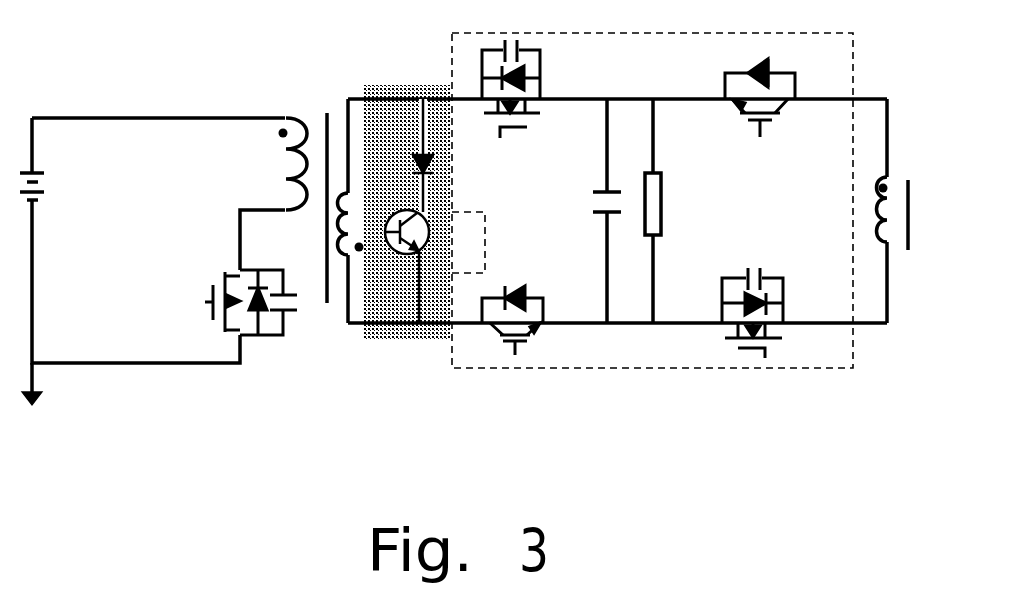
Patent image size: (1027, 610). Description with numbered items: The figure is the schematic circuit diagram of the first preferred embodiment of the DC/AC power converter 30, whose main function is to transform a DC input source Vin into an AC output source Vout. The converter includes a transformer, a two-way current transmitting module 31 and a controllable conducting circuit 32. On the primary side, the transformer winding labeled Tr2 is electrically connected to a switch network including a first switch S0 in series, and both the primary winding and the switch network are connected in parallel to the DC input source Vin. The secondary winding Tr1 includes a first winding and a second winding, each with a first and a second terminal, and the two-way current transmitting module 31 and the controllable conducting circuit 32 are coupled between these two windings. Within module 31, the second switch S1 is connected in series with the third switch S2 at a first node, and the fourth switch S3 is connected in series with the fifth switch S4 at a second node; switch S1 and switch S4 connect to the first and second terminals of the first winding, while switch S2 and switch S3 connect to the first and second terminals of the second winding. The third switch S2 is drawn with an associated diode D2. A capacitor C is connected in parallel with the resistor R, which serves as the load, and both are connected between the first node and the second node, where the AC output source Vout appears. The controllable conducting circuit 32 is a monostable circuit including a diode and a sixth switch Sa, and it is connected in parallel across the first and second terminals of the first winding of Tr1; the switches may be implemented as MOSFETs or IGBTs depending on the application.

The DC input source Vin is at (58, 287).
The auxiliary transformer Tr2 is at (247, 164).
The first switch S0 is at (241, 302).
The secondary winding Tr1 is at (631, 203).
The controllable conducting circuit 32 is at (406, 235).
The sixth switch Sa is at (466, 243).
The second switch S1 is at (501, 89).
The third switch S2 is at (756, 105).
The fourth switch S3 is at (741, 318).
The fifth switch S4 is at (504, 322).
The diode D2 is at (756, 62).
The AC output source Vout is at (573, 156).
The capacitor C is at (591, 211).
The resistor R is at (665, 211).
The two-way current transmitting module 31 is at (652, 221).
The DC/AC power converter 30 is at (826, 440).